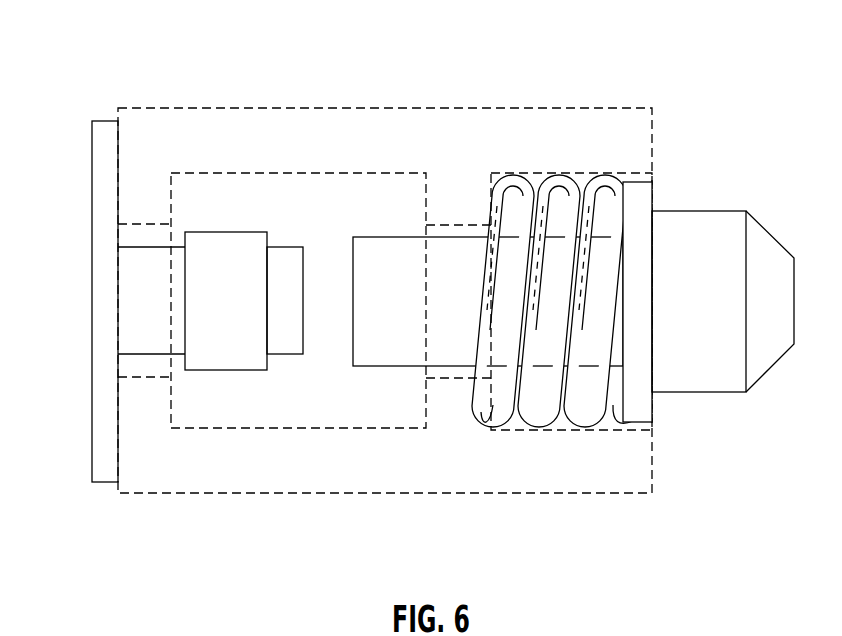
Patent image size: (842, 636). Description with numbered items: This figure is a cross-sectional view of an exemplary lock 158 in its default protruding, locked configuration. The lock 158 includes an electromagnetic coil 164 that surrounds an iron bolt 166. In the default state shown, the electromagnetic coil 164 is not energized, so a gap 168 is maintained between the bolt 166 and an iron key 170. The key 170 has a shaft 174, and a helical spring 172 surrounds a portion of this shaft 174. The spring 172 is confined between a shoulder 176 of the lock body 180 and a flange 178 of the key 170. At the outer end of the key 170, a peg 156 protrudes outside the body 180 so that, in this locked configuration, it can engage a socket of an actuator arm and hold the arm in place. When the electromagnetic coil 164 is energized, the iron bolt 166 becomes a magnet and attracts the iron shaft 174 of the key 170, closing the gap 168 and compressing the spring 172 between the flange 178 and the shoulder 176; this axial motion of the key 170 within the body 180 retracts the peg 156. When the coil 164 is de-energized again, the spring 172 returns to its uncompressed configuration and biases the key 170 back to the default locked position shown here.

The peg 156 is at (708, 229).
The lock 158 is at (488, 38).
The electromagnetic coil 164 is at (214, 247).
The iron bolt 166 is at (147, 293).
The gap 168 is at (312, 312).
The iron key 170 is at (443, 323).
The helical spring 172 is at (563, 175).
The shaft 174 is at (453, 250).
The shoulder 176 is at (492, 188).
The flange 178 is at (641, 183).
The body 180 is at (323, 133).